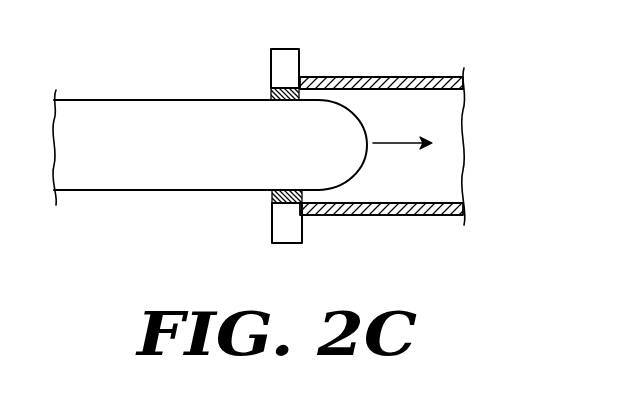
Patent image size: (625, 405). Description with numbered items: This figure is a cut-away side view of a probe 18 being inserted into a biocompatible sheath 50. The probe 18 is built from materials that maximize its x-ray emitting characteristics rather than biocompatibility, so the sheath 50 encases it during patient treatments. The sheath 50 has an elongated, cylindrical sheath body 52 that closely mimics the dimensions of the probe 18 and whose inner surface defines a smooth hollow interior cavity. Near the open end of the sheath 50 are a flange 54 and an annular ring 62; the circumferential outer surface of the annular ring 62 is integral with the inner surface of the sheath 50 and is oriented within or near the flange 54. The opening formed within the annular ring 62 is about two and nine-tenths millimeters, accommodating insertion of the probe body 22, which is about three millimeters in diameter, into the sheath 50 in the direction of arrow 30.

The probe 18 is at (127, 80).
The probe body 22 is at (216, 110).
The arrow 30 is at (390, 144).
The sheath 50 is at (391, 60).
The sheath body 52 is at (441, 213).
The flange 54 is at (286, 223).
The annular ring 62 is at (271, 197).